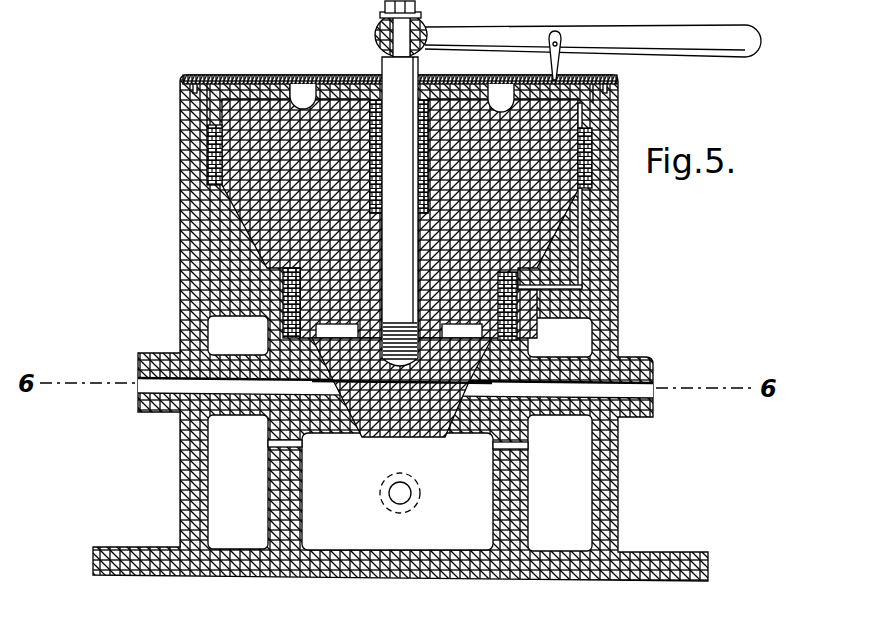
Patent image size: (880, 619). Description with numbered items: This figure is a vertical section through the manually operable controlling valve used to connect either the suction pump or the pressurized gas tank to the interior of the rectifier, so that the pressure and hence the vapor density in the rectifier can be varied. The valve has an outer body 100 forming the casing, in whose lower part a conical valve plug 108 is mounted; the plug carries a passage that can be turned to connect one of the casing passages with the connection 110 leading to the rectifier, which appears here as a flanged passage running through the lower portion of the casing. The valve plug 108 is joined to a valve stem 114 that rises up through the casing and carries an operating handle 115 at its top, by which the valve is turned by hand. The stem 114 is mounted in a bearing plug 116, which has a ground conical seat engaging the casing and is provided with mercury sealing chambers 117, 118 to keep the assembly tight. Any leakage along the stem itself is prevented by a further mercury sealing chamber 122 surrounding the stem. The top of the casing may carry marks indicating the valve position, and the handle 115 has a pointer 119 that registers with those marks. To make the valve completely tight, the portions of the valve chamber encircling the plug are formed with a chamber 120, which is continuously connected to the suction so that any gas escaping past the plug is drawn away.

The housing 100 is at (182, 292).
The conical valve plug 108 is at (365, 437).
The connection to the rectifier 110 is at (649, 366).
The valve stem 114 is at (406, 70).
The operating handle 115 is at (703, 58).
The bearing plug 116 is at (236, 200).
The mercury sealing chamber 117 is at (210, 157).
The mercury sealing chamber 118 is at (283, 318).
The pointer 119 is at (558, 66).
The chamber 120 is at (428, 493).
The mercury sealing chamber 122 is at (372, 108).